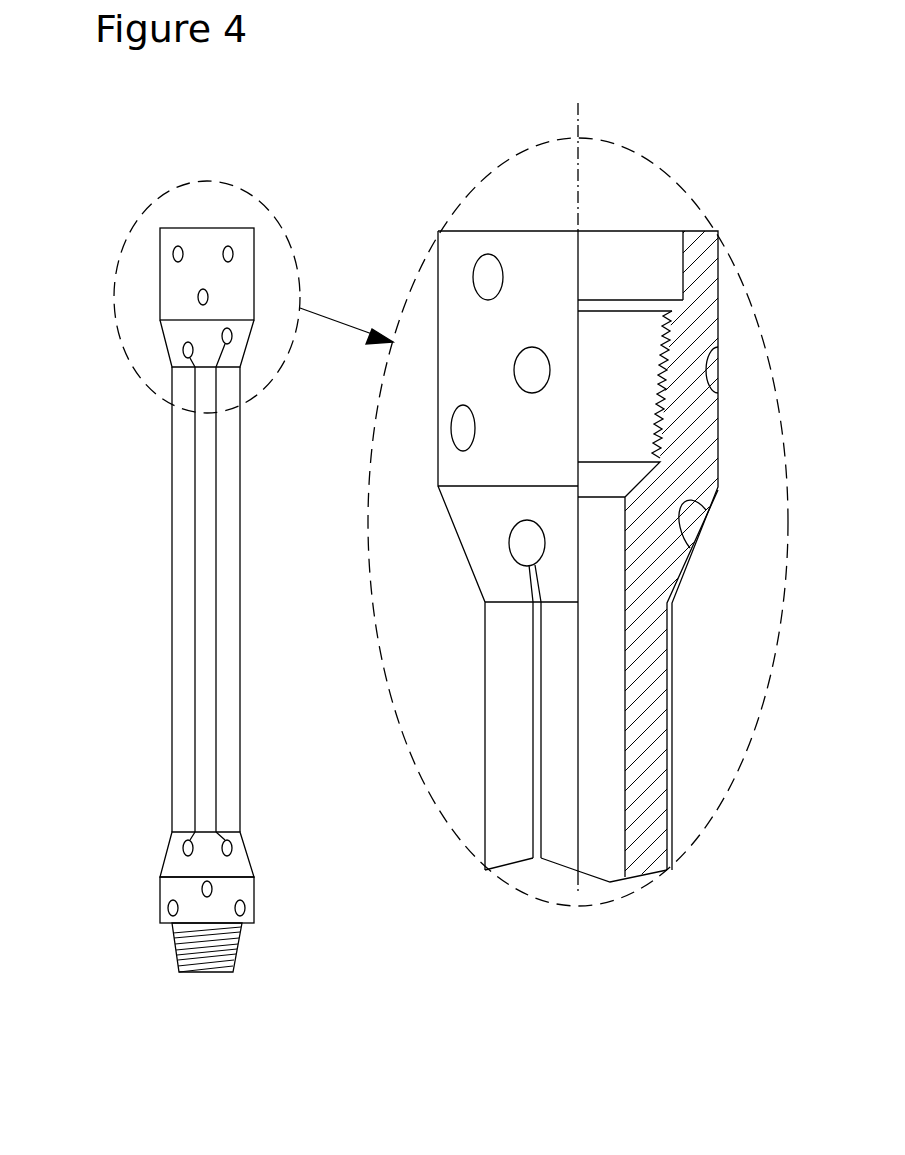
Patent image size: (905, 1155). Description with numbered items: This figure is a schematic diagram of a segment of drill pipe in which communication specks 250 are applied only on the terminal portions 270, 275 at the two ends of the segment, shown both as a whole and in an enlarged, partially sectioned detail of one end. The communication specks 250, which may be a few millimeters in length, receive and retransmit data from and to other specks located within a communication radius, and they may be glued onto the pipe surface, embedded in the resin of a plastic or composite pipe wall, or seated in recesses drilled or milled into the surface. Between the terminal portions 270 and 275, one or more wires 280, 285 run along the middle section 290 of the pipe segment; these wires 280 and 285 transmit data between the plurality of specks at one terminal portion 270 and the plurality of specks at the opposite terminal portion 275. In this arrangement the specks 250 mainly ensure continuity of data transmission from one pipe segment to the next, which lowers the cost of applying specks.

The communication specks 250 is at (490, 286).
The terminal portion 270 is at (160, 285).
The terminal portion 275 is at (160, 905).
The wire 280 is at (195, 615).
The wire 285 is at (216, 650).
The middle section 290 is at (172, 697).